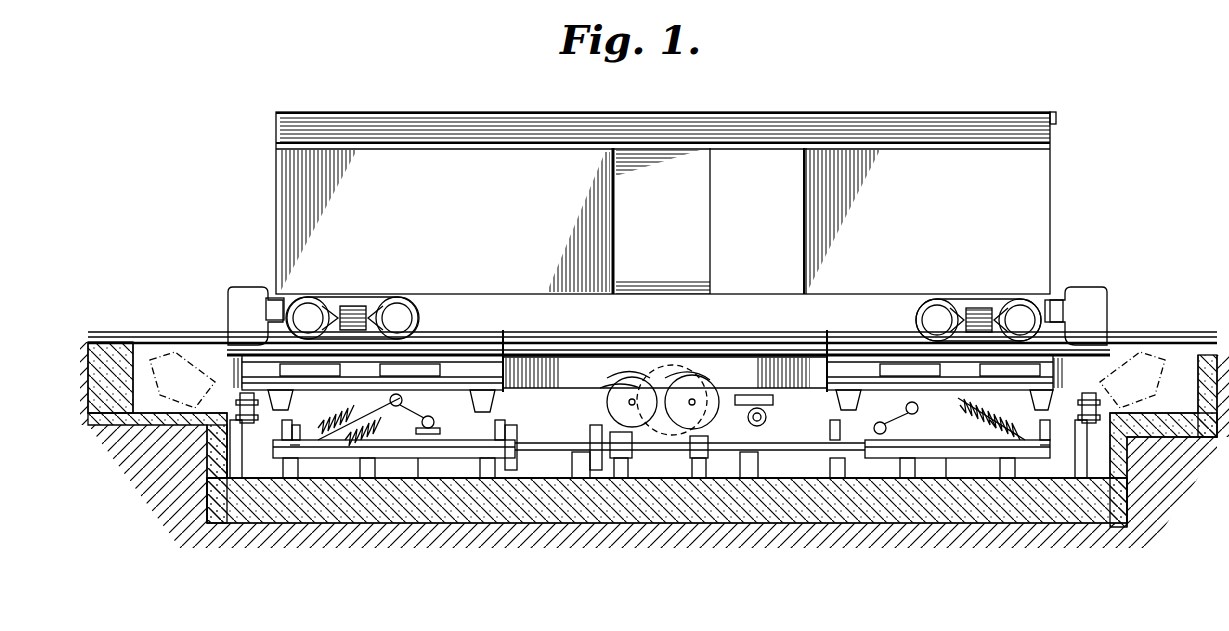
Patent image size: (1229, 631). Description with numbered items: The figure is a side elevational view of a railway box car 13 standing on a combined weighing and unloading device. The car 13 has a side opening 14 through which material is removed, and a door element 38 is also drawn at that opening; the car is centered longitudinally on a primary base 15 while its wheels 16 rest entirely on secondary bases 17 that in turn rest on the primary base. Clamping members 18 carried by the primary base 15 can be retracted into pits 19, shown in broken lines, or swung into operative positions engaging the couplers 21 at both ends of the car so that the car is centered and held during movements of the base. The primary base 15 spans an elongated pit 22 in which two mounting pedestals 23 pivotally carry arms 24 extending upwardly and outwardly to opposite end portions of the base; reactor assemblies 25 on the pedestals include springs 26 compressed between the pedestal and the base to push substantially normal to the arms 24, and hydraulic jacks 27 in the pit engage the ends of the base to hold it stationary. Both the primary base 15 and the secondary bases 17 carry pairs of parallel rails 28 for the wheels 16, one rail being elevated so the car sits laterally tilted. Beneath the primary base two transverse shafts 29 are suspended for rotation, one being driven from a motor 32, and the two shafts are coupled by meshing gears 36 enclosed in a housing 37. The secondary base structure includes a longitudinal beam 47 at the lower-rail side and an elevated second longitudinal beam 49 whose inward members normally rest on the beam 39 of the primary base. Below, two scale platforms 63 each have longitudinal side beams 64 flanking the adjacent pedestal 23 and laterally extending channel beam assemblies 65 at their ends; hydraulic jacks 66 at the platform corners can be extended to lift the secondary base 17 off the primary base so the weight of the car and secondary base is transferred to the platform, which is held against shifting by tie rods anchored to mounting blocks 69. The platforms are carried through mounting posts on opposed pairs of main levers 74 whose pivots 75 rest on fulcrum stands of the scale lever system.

The railway box car 13 is at (1055, 216).
The side opening 14 is at (616, 224).
The primary base 15 is at (662, 331).
The wheels 16 is at (318, 298).
The secondary bases 17 is at (512, 378).
The clamping members 18 is at (228, 300).
The pits 19 is at (110, 392).
The couplers 21 is at (268, 297).
The elongated pit 22 is at (668, 468).
The mounting pedestals 23 is at (458, 478).
The arms 24 is at (406, 404).
The reactor assemblies 25 is at (669, 422).
The springs 26 is at (671, 419).
The hydraulic jacks 27 is at (1080, 408).
The rails 28 is at (445, 345).
The shafts 29 is at (663, 402).
The motor 32 is at (767, 418).
The meshing gears 36 is at (672, 400).
The housing 37 is at (652, 375).
The door opening 38 is at (650, 290).
The beam 39 is at (600, 390).
The beam 47 is at (470, 395).
The second longitudinally extending beam 49 is at (503, 345).
The scale platforms 63 is at (418, 480).
The side beams 64 is at (365, 450).
The channel beam assemblies 65 is at (284, 428).
The hydraulic jacks 66 is at (290, 430).
The mounting blocks 69 is at (400, 467).
The main levers 74 is at (762, 462).
The pivots 75 is at (518, 462).